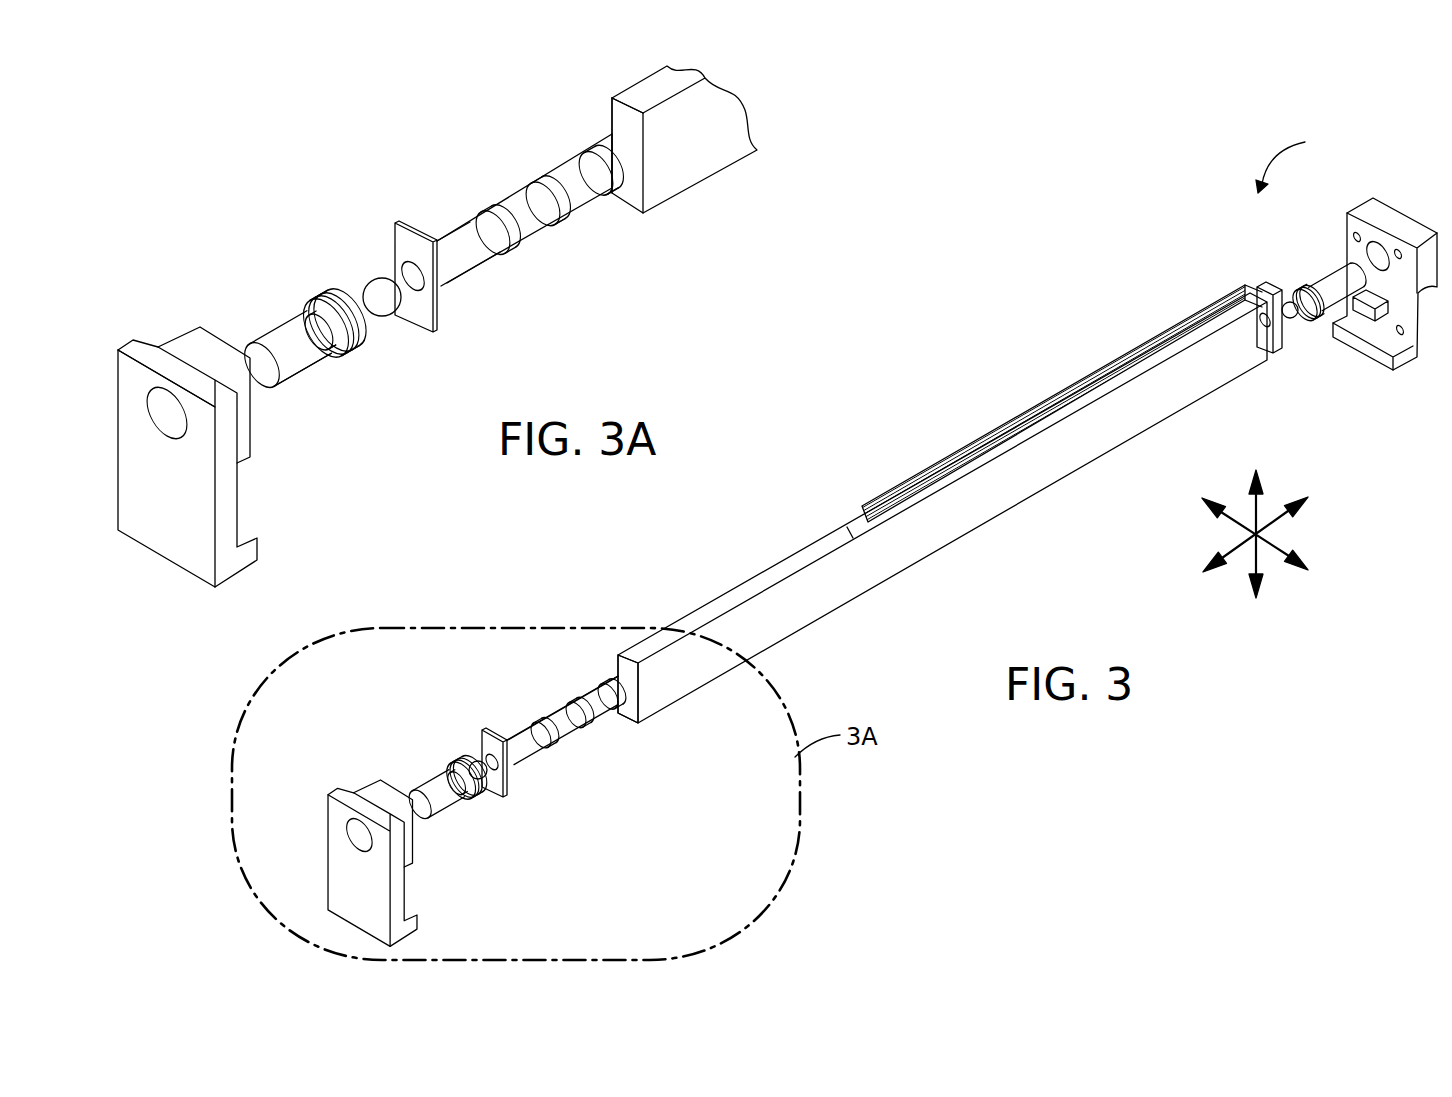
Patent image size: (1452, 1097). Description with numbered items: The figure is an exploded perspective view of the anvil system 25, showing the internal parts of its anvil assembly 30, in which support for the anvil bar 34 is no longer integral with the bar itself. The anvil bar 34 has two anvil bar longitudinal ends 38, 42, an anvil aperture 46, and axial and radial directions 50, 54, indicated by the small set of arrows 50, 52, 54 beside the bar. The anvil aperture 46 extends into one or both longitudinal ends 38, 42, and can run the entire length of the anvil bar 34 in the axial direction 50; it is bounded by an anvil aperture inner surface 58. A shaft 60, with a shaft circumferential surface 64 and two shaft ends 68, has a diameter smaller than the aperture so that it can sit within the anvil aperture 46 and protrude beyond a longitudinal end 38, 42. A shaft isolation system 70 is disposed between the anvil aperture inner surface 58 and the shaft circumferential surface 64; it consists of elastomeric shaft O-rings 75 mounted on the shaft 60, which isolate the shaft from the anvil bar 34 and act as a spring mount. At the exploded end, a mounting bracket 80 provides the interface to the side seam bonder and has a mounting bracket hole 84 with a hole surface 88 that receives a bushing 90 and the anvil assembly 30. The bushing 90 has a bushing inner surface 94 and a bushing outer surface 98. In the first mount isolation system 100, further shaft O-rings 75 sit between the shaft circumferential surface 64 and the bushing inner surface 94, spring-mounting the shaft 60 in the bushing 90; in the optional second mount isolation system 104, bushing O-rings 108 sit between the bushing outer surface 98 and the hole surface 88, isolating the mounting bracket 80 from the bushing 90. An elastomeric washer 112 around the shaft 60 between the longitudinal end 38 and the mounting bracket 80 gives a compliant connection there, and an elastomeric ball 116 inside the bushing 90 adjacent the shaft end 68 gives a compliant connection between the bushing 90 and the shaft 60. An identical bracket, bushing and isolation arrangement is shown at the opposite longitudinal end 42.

In FIG. 3, the anvil system 25 is at (1300, 160).
In FIG. 3, the anvil assembly 30 is at (684, 795).
In FIG. 3A, the anvil bar 34 is at (682, 192).
In FIG. 3, the anvil bar 34 is at (1013, 492).
In FIG. 3A, the anvil bar longitudinal end 38 is at (617, 110).
In FIG. 3, the anvil bar longitudinal end 38 is at (638, 723).
In FIG. 3, the anvil bar longitudinal end 42 is at (1267, 358).
In FIG. 3A, the anvil aperture 46 is at (620, 127).
In FIG. 3, the axial direction 50 is at (1274, 534).
In FIG. 3, the second axis 52 is at (1273, 544).
In FIG. 3, the radial direction 54 is at (1256, 593).
In FIG. 3A, the anvil aperture inner surface 58 is at (613, 193).
In FIG. 3A, the shaft 60 is at (508, 197).
In FIG. 3, the shaft 60 is at (563, 733).
In FIG. 3A, the shaft circumferential surface 64 is at (520, 232).
In FIG. 3A, the shaft end 68 is at (448, 230).
In FIG. 3A, the shaft isolation system 70 is at (603, 239).
In FIG. 3A, the shaft O-ring 75 is at (563, 200).
In FIG. 3A, the mounting bracket 80 is at (134, 340).
In FIG. 3, the mounting bracket 80 is at (326, 832).
In FIG. 3A, the mounting bracket hole 84 is at (172, 427).
In FIG. 3A, the hole surface 88 is at (160, 402).
In FIG. 3A, the bushing 90 is at (270, 332).
In FIG. 3, the bushing 90 is at (430, 823).
In FIG. 3A, the bushing inner surface 94 is at (331, 284).
In FIG. 3A, the bushing outer surface 98 is at (287, 385).
In FIG. 3A, the first mount isolation system 100 is at (488, 296).
In FIG. 3A, the second mount isolation system 104 is at (360, 368).
In FIG. 3A, the bushing O-ring 108 is at (313, 360).
In FIG. 3A, the elastomeric washer 112 is at (433, 330).
In FIG. 3A, the elastomeric ball 116 is at (378, 287).